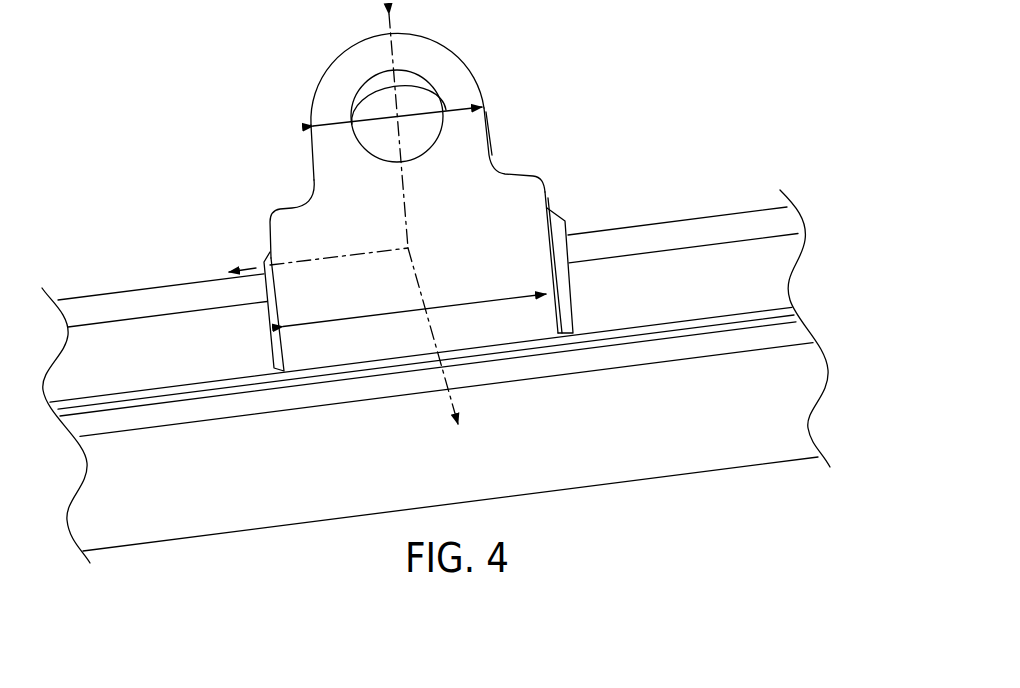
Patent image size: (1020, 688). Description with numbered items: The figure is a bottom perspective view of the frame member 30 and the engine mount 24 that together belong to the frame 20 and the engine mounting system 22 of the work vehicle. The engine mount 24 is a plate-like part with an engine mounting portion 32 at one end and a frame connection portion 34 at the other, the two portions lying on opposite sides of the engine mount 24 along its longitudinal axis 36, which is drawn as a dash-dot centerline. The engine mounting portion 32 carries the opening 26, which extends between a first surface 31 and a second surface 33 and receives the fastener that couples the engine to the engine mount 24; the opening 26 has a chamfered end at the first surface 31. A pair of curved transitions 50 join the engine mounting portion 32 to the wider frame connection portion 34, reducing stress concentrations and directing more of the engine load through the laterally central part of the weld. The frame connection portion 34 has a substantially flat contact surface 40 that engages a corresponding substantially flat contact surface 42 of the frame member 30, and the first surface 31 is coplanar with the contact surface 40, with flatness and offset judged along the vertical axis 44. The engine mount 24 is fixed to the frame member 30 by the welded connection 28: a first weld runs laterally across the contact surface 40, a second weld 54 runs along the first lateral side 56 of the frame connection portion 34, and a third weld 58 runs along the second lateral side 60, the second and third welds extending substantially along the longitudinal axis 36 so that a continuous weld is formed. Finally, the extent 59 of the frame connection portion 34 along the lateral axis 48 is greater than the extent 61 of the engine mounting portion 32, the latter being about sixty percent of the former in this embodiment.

The frame 20 is at (621, 489).
The engine mounting system 22 is at (546, 145).
The engine mount 24 is at (437, 42).
The opening 26 is at (418, 92).
The welded connection 28 is at (582, 296).
The frame member 30 is at (698, 447).
The first surface 31 is at (281, 146).
The engine mounting portion 32 is at (296, 116).
The second surface 33 is at (352, 68).
The frame connection portion 34 is at (248, 317).
The longitudinal axis 36 is at (408, 200).
The substantially flat contact surface 40 is at (532, 366).
The substantially flat contact surface 42 is at (716, 255).
The vertical axis 44 is at (447, 378).
The lateral axis 48 is at (308, 260).
The curved transitions 50 is at (287, 187).
The second weld 54 is at (270, 367).
The first lateral side 56 is at (262, 348).
The third weld 58 is at (575, 323).
The extent 59 is at (486, 299).
The second lateral side 60 is at (581, 256).
The extent 61 is at (327, 83).